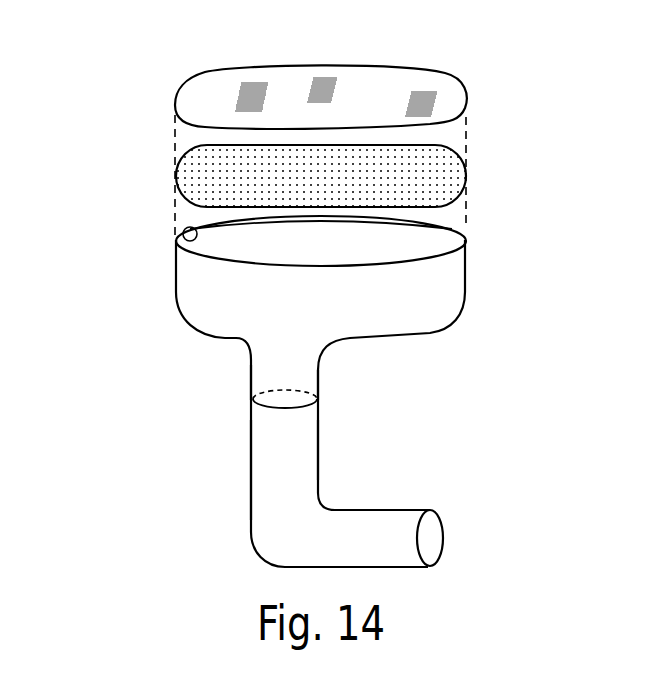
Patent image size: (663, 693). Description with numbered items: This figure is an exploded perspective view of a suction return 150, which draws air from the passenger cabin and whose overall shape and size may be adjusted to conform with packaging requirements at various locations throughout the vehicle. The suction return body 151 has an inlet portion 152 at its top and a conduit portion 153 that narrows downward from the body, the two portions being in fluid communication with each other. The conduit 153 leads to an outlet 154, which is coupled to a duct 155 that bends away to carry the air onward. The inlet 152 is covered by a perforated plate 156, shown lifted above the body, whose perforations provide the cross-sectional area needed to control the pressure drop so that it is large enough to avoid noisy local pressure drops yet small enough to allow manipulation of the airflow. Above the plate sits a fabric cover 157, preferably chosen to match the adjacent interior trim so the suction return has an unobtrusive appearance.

The suction return 150 is at (160, 332).
The suction return body 151 is at (467, 283).
The inlet portion 152 is at (187, 232).
The conduit portion 153 is at (303, 360).
The outlet 154 is at (283, 400).
The duct 155 is at (268, 472).
The perforated plate 156 is at (187, 177).
The fabric cover 157 is at (445, 85).